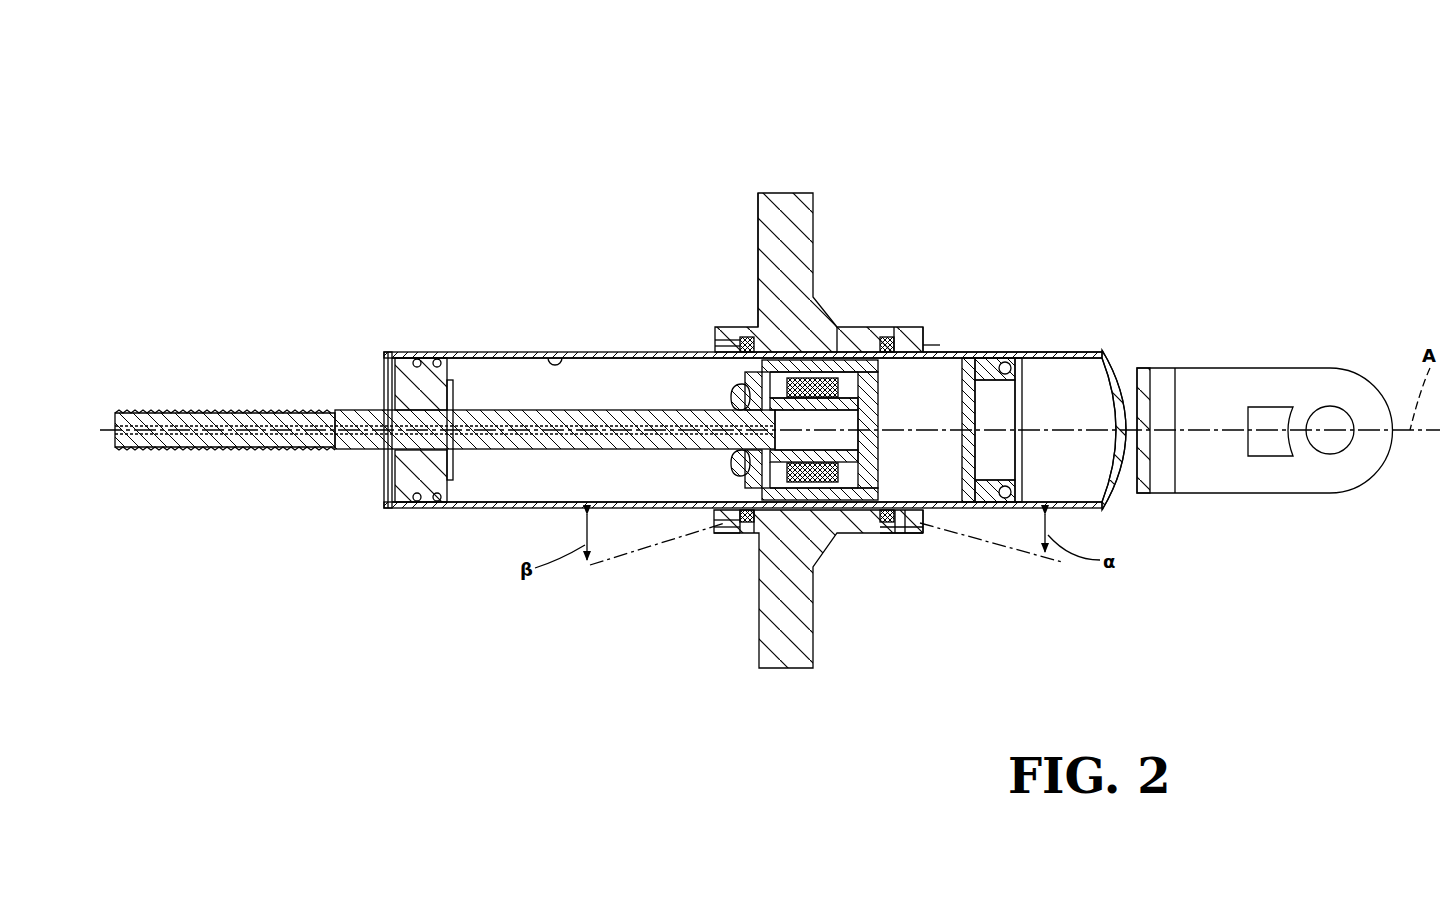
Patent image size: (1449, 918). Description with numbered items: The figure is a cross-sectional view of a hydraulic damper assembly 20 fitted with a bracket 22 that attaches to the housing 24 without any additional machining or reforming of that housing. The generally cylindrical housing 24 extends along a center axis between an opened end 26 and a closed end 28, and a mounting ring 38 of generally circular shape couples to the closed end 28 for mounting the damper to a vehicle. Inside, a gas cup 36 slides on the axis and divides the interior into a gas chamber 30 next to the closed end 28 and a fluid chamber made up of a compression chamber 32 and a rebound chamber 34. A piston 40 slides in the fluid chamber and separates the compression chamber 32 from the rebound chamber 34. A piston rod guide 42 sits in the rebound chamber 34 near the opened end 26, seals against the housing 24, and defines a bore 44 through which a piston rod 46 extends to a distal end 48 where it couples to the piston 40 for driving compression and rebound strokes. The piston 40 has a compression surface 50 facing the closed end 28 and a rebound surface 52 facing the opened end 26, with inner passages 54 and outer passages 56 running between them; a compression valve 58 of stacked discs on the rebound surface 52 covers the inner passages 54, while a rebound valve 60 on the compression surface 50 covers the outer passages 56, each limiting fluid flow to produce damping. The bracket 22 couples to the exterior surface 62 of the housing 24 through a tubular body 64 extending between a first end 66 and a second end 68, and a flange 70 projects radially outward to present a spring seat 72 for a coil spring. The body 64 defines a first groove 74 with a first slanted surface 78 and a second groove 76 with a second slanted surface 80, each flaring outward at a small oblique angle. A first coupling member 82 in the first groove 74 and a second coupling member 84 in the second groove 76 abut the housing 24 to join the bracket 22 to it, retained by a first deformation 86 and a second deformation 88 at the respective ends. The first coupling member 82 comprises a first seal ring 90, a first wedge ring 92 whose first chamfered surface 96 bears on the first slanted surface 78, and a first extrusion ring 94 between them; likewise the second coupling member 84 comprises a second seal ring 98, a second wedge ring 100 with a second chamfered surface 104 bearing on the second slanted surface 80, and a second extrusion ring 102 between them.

The hydraulic damper assembly 20 is at (198, 325).
The bracket 22 is at (877, 322).
The housing 24 is at (532, 352).
The opened end 26 is at (388, 352).
The closed end 28 is at (1112, 345).
The gas chamber 30 is at (1060, 357).
The compression chamber 32 is at (945, 358).
The rebound chamber 34 is at (555, 358).
The gas cup 36 is at (972, 355).
The mounting ring 38 is at (1323, 378).
The piston 40 is at (778, 360).
The piston rod guide 42 is at (442, 358).
The bore 44 is at (385, 412).
The piston rod 46 is at (150, 412).
The distal end 48 is at (813, 567).
The compression surface 50 is at (880, 430).
The rebound surface 52 is at (735, 392).
The inner passages 54 is at (878, 460).
The outer passages 56 is at (843, 480).
The compression valve 58 is at (735, 468).
The rebound valve 60 is at (878, 372).
The exterior surface 62 is at (490, 352).
The body 64 is at (845, 342).
The first end 66 is at (923, 345).
The second end 68 is at (722, 345).
The flange 70 is at (783, 200).
The spring seat 72 is at (758, 240).
The first groove 74 is at (930, 360).
The second groove 76 is at (715, 350).
The first slanted surface 78 is at (908, 520).
The second slanted surface 80 is at (725, 522).
The first coupling member 82 is at (887, 345).
The second coupling member 84 is at (745, 340).
The first deformation 86 is at (918, 520).
The second deformation 88 is at (717, 522).
The first seal ring 90 is at (888, 522).
The first wedge ring 92 is at (920, 520).
The first extrusion ring 94 is at (893, 522).
The first chamfered surface 96 is at (900, 522).
The second seal ring 98 is at (745, 525).
The second wedge ring 100 is at (716, 520).
The second extrusion ring 102 is at (735, 525).
The second chamfered surface 104 is at (728, 525).